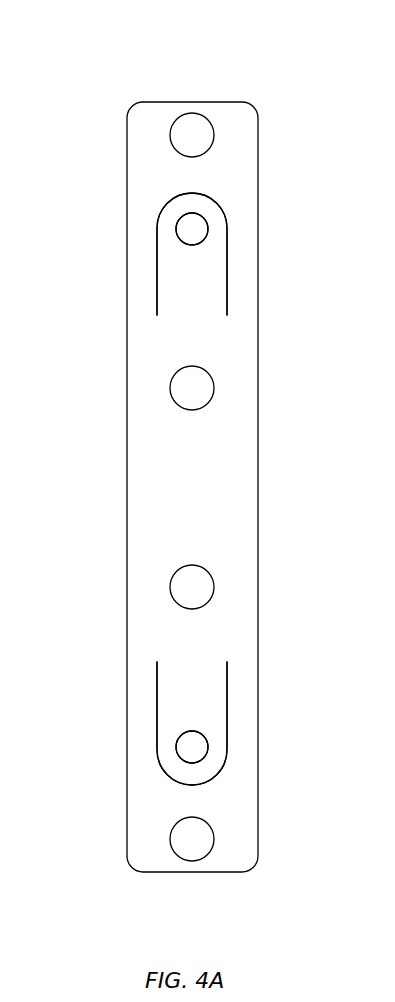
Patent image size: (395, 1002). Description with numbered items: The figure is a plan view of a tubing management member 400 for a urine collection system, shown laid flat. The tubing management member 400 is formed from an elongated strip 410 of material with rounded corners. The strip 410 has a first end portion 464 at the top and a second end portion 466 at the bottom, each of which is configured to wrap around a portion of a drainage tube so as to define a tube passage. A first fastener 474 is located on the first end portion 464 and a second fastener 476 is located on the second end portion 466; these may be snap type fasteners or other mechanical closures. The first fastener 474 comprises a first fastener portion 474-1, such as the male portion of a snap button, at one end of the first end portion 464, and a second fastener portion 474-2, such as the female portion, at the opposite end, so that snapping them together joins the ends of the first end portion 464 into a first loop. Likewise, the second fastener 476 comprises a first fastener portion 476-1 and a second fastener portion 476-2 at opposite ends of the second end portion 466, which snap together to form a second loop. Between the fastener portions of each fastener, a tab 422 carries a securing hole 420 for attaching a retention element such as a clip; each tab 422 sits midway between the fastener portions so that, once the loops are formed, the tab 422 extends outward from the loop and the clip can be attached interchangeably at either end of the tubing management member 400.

The tubing management member 400 is at (157, 75).
The strip 410 is at (127, 428).
The securing hole 420 is at (180, 220).
The tab 422 is at (155, 275).
The first end portion 464 is at (127, 232).
The second end portion 466 is at (127, 665).
The first fastener 474 is at (214, 387).
The first fastener portion 474-1 is at (171, 128).
The second fastener portion 474-2 is at (170, 386).
The second fastener 476 is at (214, 837).
The first fastener portion 476-1 is at (193, 861).
The second fastener portion 476-2 is at (212, 576).